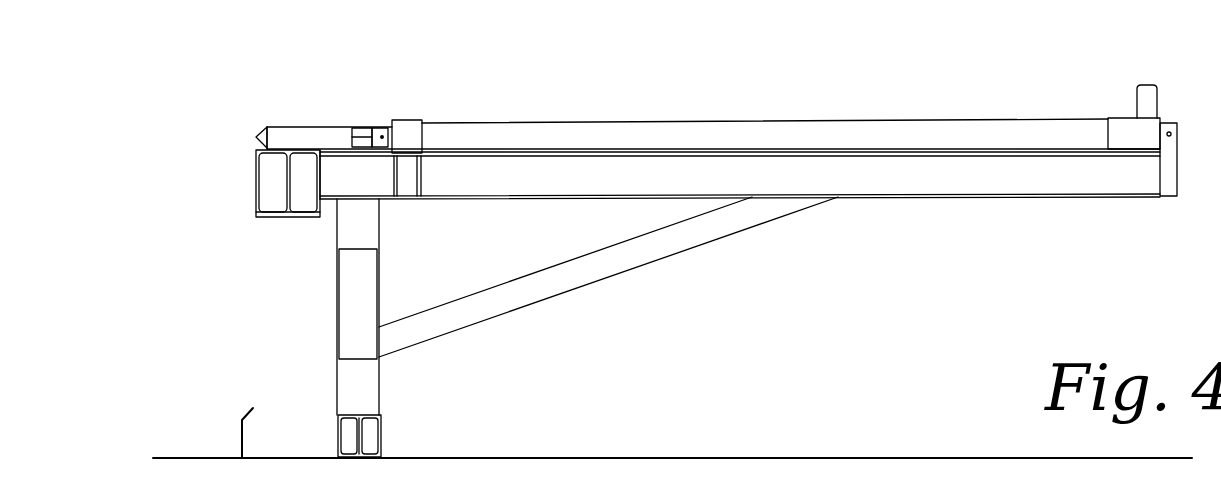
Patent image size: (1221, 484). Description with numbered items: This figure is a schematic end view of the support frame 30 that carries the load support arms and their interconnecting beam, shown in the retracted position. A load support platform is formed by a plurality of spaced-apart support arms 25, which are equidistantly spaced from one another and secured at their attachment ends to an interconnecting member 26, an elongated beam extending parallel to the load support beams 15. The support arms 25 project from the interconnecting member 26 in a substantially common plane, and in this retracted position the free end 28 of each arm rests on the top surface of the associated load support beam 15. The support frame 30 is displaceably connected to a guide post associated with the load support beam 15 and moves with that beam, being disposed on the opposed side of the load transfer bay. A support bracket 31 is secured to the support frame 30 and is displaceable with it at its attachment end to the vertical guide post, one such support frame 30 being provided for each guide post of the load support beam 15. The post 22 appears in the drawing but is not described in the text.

The load support beam 15 is at (267, 209).
The support post 22 is at (379, 385).
The support arm 25 is at (1028, 128).
The interconnecting member 26 is at (1148, 115).
The free end 28 is at (313, 137).
The support frame 30 is at (1087, 175).
The support bracket 31 is at (633, 258).